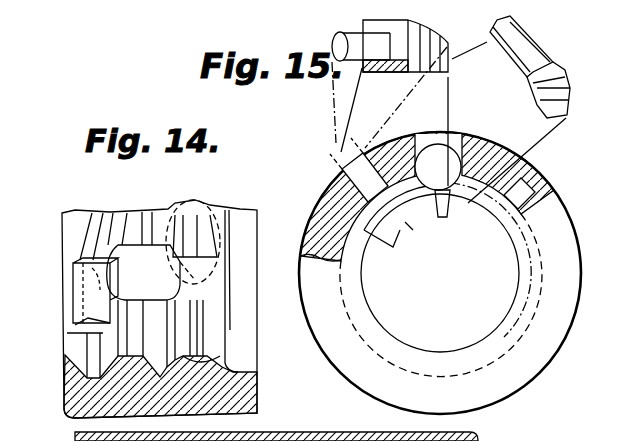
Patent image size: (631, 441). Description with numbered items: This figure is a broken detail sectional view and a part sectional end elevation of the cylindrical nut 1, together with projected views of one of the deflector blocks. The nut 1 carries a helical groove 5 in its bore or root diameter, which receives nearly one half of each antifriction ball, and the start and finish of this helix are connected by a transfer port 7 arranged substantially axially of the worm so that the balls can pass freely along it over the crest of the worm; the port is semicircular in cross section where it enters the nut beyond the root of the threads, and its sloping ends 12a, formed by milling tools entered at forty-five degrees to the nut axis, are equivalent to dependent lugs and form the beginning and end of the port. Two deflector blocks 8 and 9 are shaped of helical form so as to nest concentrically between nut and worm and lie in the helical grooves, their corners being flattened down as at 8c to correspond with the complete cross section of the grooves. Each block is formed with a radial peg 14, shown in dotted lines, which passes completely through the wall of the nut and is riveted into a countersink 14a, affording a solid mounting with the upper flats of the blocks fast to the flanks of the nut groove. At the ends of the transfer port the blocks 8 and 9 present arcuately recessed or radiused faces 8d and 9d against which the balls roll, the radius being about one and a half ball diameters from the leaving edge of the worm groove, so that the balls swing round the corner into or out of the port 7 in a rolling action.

In FIG. 14, the cylindrical nut 1 is at (253, 388).
In FIG. 15, the cylindrical nut 1 is at (347, 360).
In FIG. 14, the helical groove of the nut 5 is at (214, 360).
In FIG. 15, the helical groove of the nut 5 is at (363, 248).
In FIG. 14, the transfer port 7 is at (138, 225).
In FIG. 15, the transfer port 7 is at (456, 148).
In FIG. 14, the deflector block 8 is at (83, 295).
In FIG. 15, the deflector block 8 is at (392, 71).
In FIG. 14, the flattened corners of the block 8c is at (87, 323).
In FIG. 14, the radiused face of block 8 8d is at (117, 282).
In FIG. 15, the radiused face of block 8 8d is at (445, 217).
In FIG. 14, the deflector block 9 is at (188, 207).
In FIG. 14, the radiused face of block 9 9d is at (214, 266).
In FIG. 14, the sloping ends of the transfer port 12a is at (92, 437).
In FIG. 15, the radial peg 14 is at (540, 58).
In FIG. 15, the countersink 14a is at (352, 173).